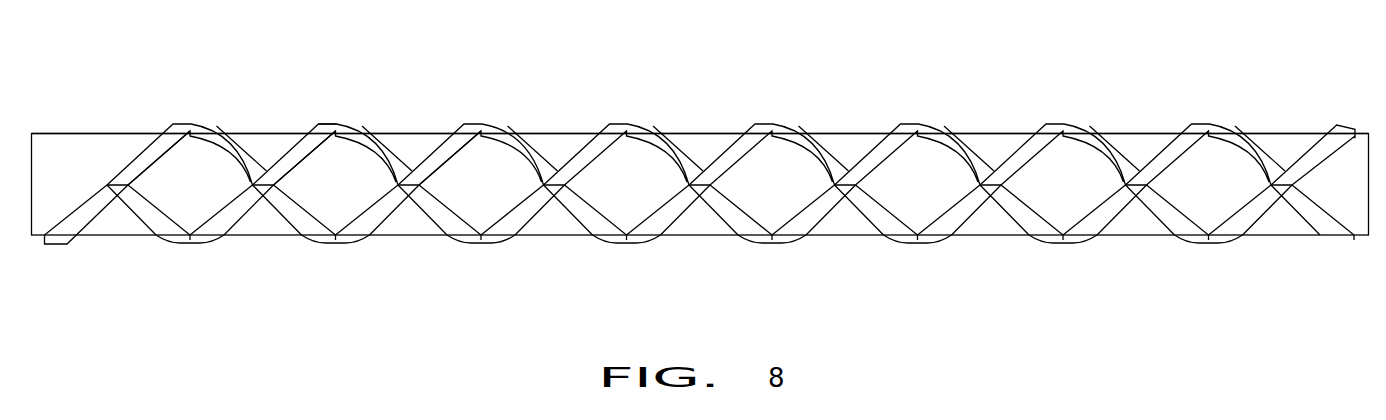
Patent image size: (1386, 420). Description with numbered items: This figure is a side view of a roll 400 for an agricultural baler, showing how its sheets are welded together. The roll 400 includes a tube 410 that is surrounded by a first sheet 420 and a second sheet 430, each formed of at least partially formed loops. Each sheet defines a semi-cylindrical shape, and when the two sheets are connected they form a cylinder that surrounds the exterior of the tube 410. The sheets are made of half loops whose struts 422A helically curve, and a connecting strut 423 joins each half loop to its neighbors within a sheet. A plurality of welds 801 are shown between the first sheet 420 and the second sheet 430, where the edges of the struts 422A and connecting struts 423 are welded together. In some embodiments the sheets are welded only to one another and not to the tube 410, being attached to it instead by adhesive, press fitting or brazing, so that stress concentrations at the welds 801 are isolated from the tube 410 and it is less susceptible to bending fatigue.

The roll 400 is at (645, 102).
The tube 410 is at (418, 133).
The first sheet 420 is at (185, 125).
The strut 422A is at (153, 154).
The connecting strut 423 is at (372, 128).
The second sheet 430 is at (180, 244).
The welds 801 is at (1282, 186).